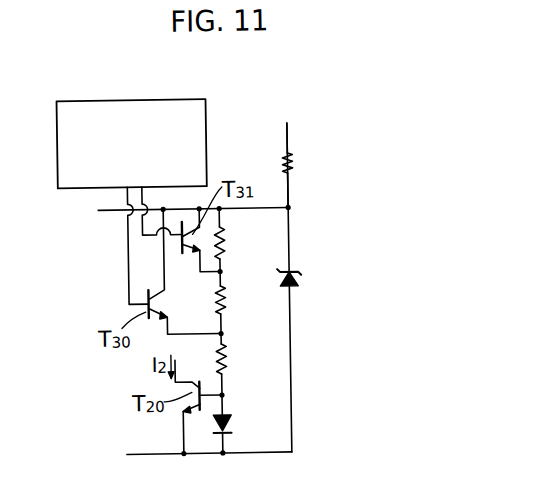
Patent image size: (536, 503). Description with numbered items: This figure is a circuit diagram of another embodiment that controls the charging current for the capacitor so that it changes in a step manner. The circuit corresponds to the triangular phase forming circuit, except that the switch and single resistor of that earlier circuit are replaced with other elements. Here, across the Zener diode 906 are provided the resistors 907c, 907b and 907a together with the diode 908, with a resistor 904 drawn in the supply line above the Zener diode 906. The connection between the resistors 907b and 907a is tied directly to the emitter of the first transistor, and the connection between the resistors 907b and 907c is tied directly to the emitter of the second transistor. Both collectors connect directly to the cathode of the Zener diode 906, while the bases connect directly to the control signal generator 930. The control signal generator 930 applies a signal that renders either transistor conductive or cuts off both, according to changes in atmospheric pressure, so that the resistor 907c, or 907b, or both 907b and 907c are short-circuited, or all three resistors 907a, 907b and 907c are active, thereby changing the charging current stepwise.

The control signal generator 930 is at (209, 123).
The resistor 904 is at (292, 165).
The resistor 907c is at (226, 243).
The resistor 907b is at (226, 311).
The resistor 907a is at (226, 362).
The Zener diode 906 is at (300, 284).
The diode 908 is at (233, 425).